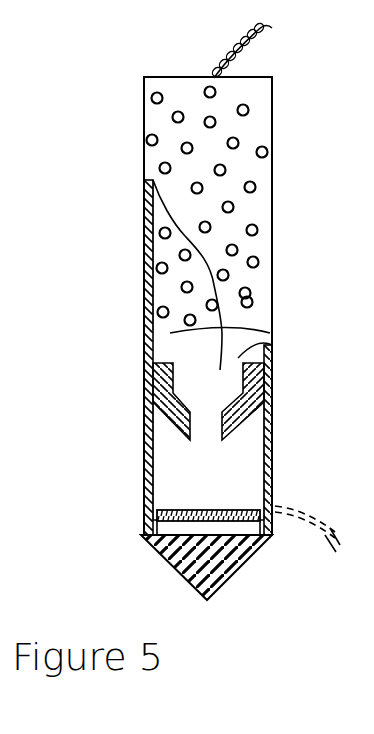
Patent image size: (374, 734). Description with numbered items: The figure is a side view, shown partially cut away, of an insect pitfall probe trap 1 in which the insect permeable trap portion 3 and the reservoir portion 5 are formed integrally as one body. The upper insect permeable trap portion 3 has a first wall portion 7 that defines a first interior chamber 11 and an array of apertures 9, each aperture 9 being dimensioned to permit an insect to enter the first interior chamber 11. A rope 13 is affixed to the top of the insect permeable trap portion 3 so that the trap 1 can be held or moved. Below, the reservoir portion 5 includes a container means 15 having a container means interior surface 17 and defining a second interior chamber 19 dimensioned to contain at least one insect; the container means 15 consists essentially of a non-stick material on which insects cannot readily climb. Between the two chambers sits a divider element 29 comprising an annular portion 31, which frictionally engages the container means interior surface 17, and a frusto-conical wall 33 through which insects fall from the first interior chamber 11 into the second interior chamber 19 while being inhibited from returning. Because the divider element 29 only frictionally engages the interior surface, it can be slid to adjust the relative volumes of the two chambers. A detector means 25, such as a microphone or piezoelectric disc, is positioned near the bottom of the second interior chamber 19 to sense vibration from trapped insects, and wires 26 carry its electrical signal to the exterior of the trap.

The insect pitfall probe trap 1 is at (60, 78).
The insect permeable trap portion 3 is at (95, 78).
The reservoir portion 5 is at (95, 331).
The first wall portion 7 is at (247, 132).
The aperture 9 is at (265, 158).
The first interior chamber 11 is at (226, 330).
The rope 13 is at (262, 30).
The container means 15 is at (268, 431).
The container means interior surface 17 is at (165, 462).
The second interior chamber 19 is at (225, 476).
The detector means 25 is at (190, 510).
The wires 26 is at (307, 519).
The divider element 29 is at (270, 333).
The annular portion 31 is at (265, 374).
The frusto-conical wall 33 is at (258, 405).